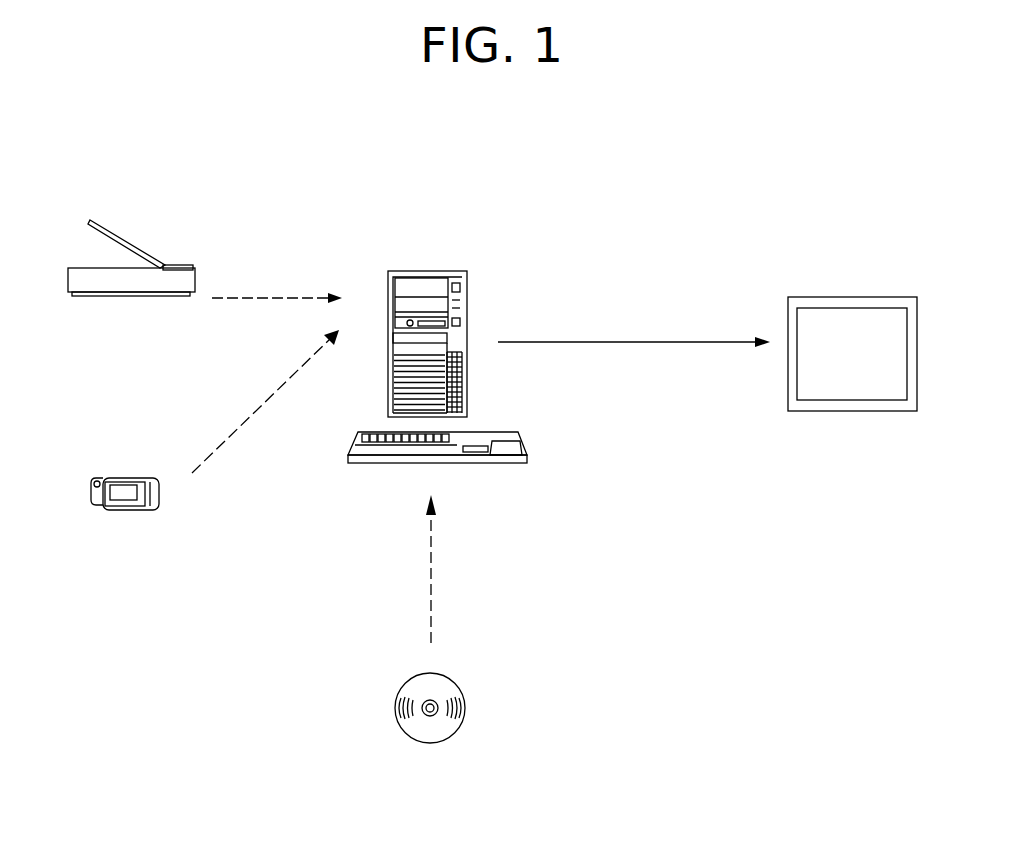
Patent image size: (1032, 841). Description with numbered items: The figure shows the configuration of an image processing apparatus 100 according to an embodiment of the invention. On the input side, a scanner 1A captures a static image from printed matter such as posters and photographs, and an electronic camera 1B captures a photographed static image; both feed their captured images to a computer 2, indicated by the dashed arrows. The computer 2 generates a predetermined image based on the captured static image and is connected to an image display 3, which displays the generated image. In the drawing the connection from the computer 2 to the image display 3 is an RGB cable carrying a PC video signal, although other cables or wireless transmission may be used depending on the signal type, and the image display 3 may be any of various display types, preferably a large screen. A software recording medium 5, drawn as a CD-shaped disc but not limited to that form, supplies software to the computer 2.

The image processing apparatus 100 is at (595, 205).
The scanner 1A is at (181, 265).
The electronic camera 1B is at (138, 478).
The computer 2 is at (422, 271).
The image display 3 is at (849, 297).
The software recording medium 5 is at (462, 691).